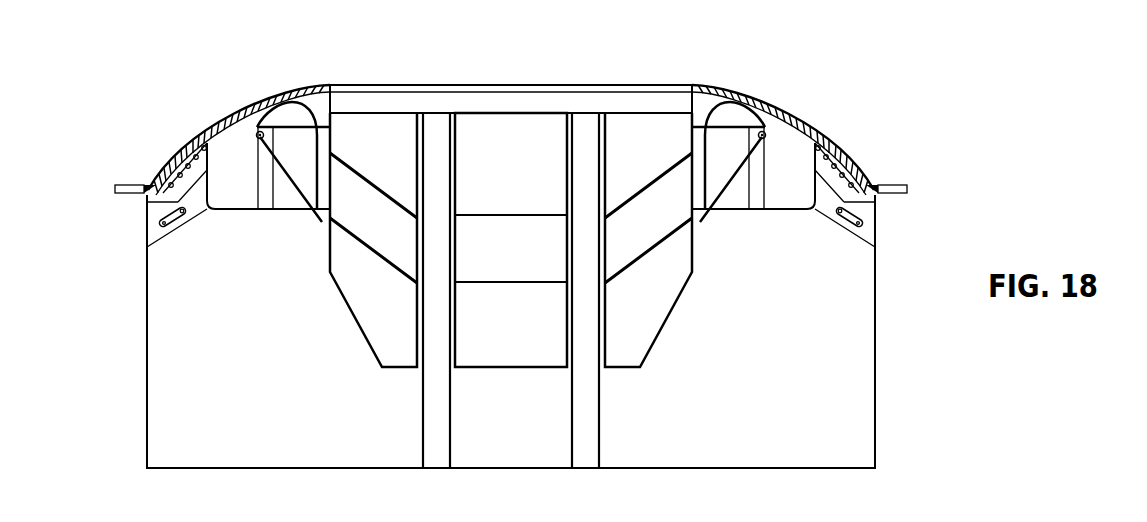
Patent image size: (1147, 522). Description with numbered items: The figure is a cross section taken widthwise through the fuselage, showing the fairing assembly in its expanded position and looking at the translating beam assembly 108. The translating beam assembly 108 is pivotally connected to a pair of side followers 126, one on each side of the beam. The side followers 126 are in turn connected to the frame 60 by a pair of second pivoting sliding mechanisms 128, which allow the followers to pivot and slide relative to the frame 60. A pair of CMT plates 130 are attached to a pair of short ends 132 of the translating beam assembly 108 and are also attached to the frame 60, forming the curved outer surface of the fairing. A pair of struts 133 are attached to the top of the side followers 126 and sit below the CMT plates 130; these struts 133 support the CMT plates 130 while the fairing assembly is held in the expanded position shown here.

The frame 60 is at (148, 212).
The translating beam assembly 108 is at (525, 156).
The side followers 126 is at (235, 203).
The second pivoting sliding mechanisms 128 is at (173, 227).
The CMT plates 130 is at (222, 118).
The short ends 132 is at (330, 85).
The struts 133 is at (196, 154).